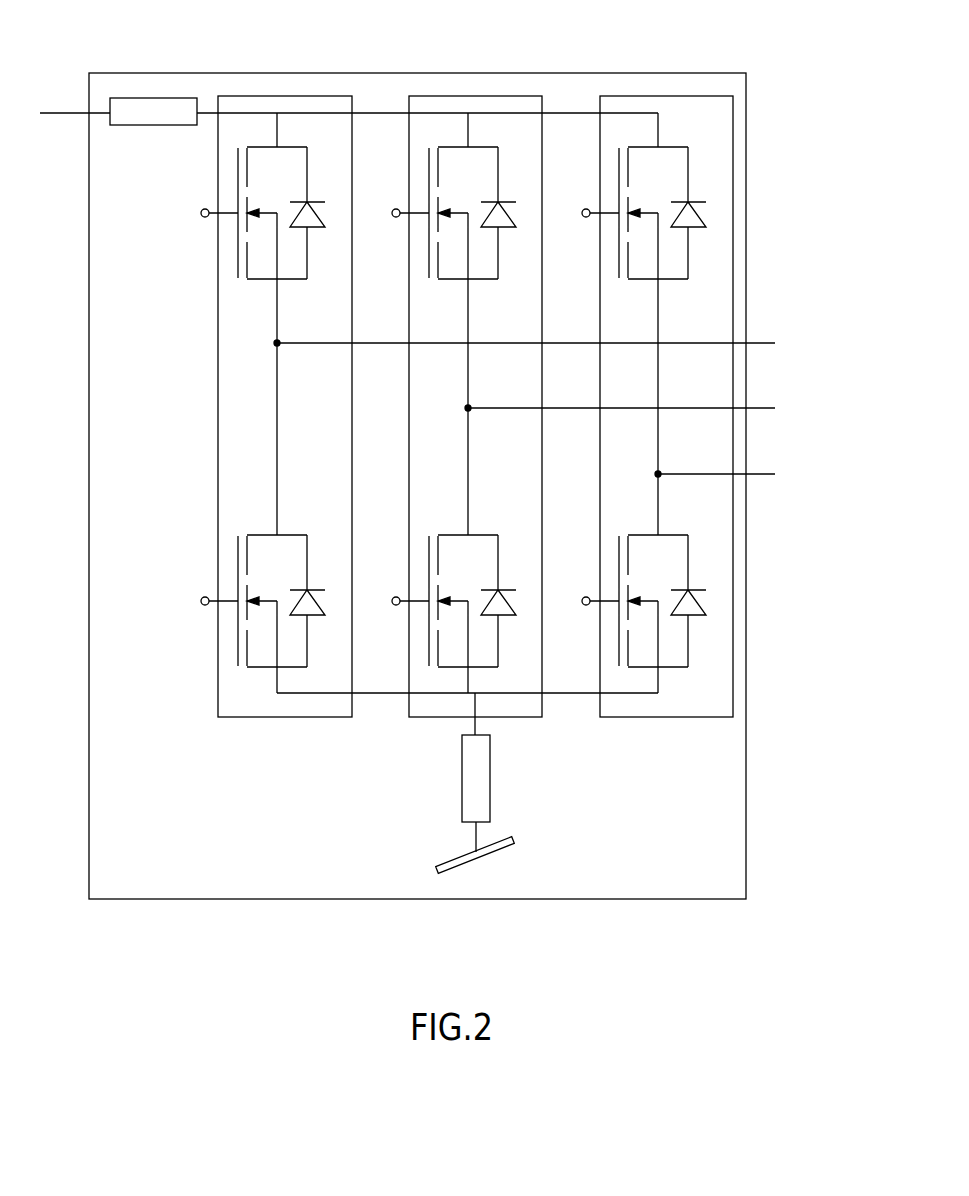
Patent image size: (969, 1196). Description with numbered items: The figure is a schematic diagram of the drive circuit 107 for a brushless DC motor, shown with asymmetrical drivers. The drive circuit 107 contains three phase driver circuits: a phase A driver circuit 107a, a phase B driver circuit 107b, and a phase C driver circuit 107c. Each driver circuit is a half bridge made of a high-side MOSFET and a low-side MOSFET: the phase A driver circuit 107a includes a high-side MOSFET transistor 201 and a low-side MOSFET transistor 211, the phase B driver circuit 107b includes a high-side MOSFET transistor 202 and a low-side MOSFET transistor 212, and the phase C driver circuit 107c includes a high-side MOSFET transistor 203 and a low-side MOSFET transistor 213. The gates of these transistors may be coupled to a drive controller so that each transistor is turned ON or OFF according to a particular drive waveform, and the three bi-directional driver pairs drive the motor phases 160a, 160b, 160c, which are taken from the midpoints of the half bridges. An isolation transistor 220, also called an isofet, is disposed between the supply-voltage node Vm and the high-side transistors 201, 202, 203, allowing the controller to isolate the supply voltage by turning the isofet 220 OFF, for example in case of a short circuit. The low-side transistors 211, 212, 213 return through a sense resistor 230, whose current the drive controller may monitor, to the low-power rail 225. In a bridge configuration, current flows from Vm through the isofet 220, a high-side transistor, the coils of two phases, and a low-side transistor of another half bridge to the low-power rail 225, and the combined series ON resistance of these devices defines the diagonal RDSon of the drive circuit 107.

The drive circuit 107 is at (414, 73).
The phase A driver circuit 107a is at (303, 718).
The phase B driver circuit 107b is at (494, 718).
The phase C driver circuit 107c is at (655, 718).
The high-side MOSFET transistor 201 is at (298, 140).
The high-side MOSFET transistor 202 is at (489, 140).
The high-side MOSFET transistor 203 is at (680, 140).
The low-side MOSFET transistor 211 is at (253, 677).
The low-side MOSFET transistor 212 is at (444, 677).
The low-side MOSFET transistor 213 is at (685, 677).
The isolation transistor 220 is at (153, 98).
The low-power rail 225 is at (488, 857).
The sense resistor 230 is at (460, 778).
The phase A 160a is at (806, 336).
The phase B 160b is at (806, 401).
The phase C 160c is at (806, 468).